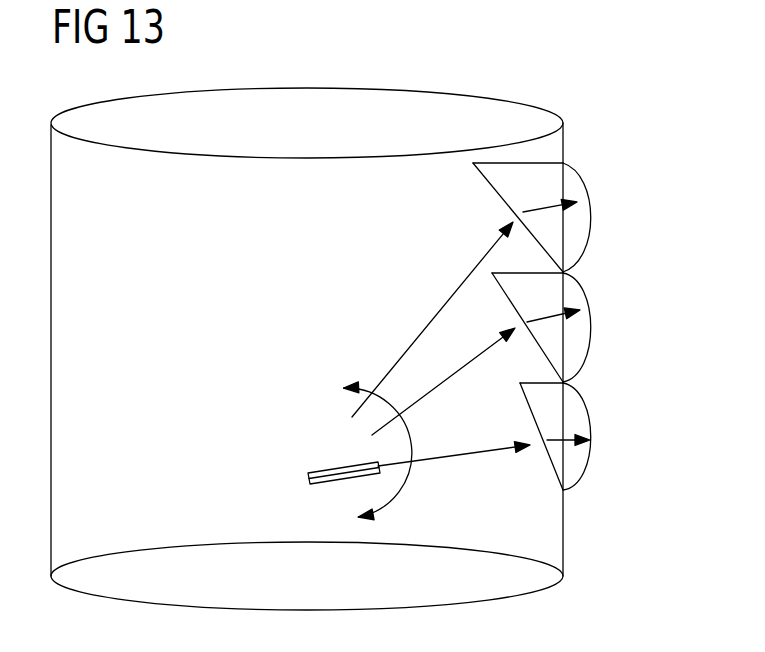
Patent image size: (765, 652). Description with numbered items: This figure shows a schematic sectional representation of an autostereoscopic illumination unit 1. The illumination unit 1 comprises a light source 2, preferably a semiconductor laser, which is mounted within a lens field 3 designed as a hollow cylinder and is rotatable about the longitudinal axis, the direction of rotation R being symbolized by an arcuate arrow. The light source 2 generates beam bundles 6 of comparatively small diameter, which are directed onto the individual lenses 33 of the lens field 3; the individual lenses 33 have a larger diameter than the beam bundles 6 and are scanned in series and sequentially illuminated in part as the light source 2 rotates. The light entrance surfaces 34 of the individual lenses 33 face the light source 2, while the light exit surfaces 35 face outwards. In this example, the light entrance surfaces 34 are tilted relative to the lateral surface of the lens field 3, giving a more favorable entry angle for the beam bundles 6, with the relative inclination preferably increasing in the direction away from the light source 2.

The illumination unit 1 is at (586, 99).
The light source 2 is at (325, 473).
The lens field 3 is at (557, 202).
The beam bundles 6 is at (440, 313).
The individual lenses 33 is at (575, 245).
The light entrance surfaces 34 is at (550, 458).
The light exit surfaces 35 is at (587, 467).
The direction of rotation R is at (404, 492).